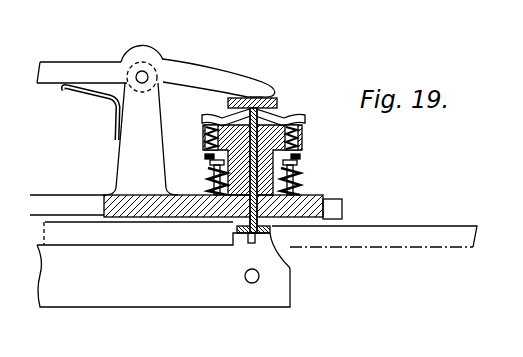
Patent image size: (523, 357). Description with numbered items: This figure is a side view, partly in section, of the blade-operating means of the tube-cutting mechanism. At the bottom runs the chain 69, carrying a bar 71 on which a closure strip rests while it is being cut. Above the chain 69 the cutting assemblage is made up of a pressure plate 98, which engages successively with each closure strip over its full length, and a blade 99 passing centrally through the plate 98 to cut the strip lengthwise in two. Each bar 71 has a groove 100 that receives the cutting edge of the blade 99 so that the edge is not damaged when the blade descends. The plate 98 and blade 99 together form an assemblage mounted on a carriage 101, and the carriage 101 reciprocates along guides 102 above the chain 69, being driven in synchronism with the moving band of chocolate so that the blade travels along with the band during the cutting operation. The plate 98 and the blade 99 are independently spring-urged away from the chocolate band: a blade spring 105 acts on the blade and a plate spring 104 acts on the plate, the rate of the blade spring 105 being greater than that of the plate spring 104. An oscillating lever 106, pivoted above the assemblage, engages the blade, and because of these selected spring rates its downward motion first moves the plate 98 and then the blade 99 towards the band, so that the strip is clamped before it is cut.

The oscillating lever 106 is at (205, 70).
The blade spring 105 is at (283, 118).
The plate spring 104 is at (210, 160).
The blade 99 is at (275, 163).
The carriage 101 is at (325, 210).
The guides 102 is at (341, 226).
The pressure plate 98 is at (272, 223).
The groove 100 is at (252, 247).
The bar 71 is at (290, 270).
The chain 69 is at (215, 302).